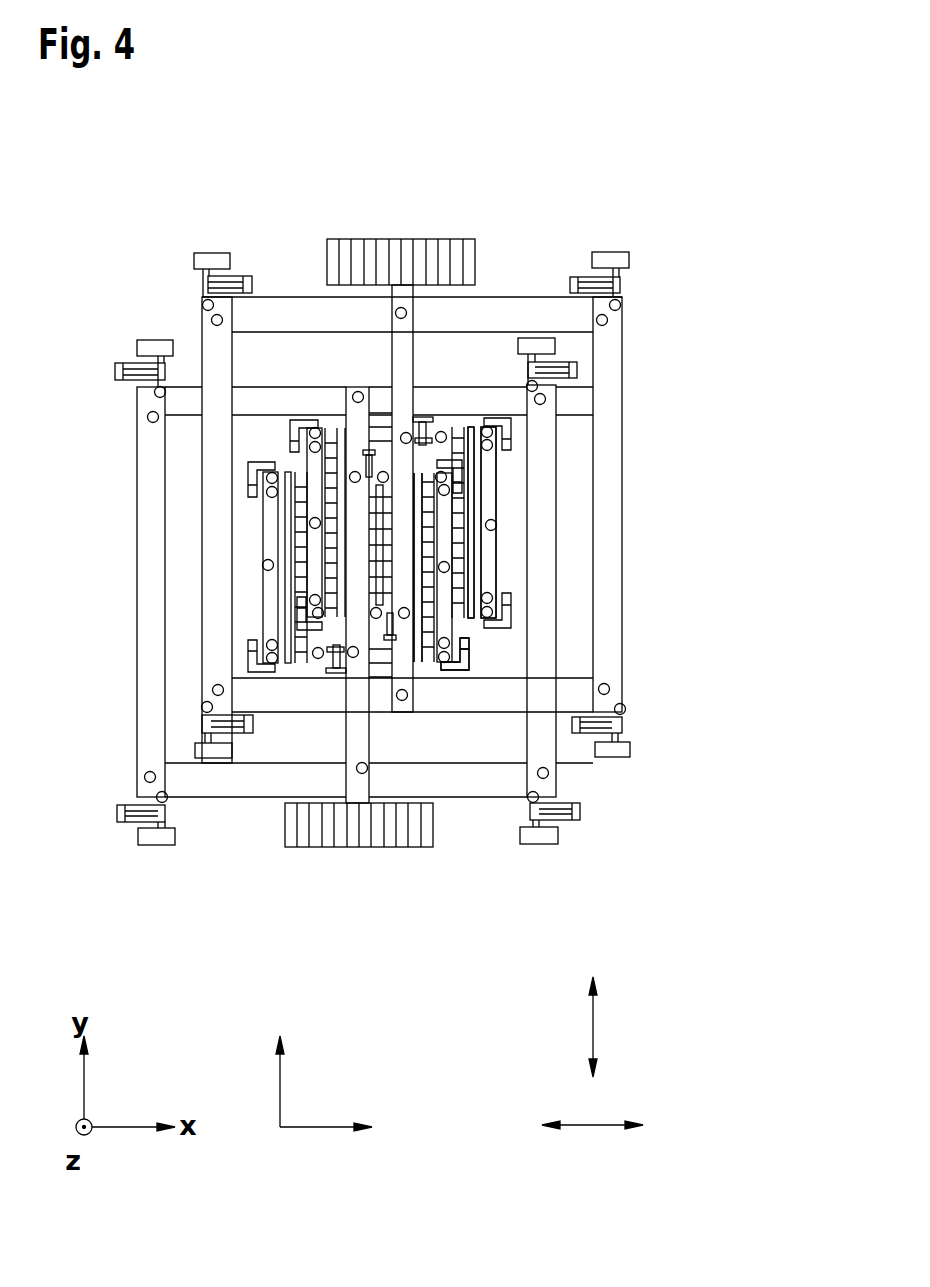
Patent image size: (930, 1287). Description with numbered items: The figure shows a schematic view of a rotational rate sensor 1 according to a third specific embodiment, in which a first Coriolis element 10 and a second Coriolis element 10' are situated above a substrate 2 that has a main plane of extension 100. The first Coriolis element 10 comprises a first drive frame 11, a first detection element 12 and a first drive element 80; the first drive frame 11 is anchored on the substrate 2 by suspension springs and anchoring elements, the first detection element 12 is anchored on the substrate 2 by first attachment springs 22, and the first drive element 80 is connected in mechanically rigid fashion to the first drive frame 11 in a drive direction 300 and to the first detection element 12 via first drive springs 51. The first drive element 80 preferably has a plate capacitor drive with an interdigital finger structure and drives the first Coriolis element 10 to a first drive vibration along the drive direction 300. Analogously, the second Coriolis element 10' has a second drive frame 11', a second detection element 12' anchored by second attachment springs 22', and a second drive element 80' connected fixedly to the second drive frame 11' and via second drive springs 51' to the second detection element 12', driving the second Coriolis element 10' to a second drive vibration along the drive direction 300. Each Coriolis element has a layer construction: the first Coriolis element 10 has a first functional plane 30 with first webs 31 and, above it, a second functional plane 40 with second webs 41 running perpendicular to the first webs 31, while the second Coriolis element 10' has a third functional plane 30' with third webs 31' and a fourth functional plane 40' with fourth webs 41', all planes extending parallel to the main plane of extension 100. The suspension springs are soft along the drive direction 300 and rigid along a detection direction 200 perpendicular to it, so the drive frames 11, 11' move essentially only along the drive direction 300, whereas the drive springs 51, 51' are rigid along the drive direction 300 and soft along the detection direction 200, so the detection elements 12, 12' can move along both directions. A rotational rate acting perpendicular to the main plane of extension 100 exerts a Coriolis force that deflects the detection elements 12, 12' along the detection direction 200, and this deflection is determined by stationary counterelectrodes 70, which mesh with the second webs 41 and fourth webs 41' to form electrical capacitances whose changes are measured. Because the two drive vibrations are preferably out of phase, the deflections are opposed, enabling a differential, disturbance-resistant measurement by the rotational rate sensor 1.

The rotational rate sensor 1 is at (622, 92).
The substrate 2 is at (677, 892).
The first Coriolis element 10 is at (187, 592).
The second Coriolis element 10' is at (554, 592).
The first drive frame 11 is at (105, 595).
The second drive frame 11' is at (620, 592).
The first detection element 12 is at (194, 546).
The second detection element 12' is at (561, 549).
The first attachment springs 22 is at (159, 510).
The second attachment springs 22' is at (596, 432).
The first functional plane 30 is at (260, 484).
The third functional plane 30' is at (562, 458).
The first webs 31 is at (433, 693).
The third webs 31' is at (541, 387).
The second functional plane 40 is at (341, 480).
The fourth functional plane 40' is at (434, 431).
The second webs 41 is at (471, 775).
The fourth webs 41' is at (563, 387).
The first drive springs 51 is at (318, 795).
The second drive springs 51' is at (462, 323).
The counterelectrodes 70 is at (472, 598).
The first drive element 80 is at (359, 874).
The second drive element 80' is at (401, 217).
The main plane of extension 100 is at (324, 1083).
The detection direction 200 is at (592, 1143).
The drive direction 300 is at (624, 1027).